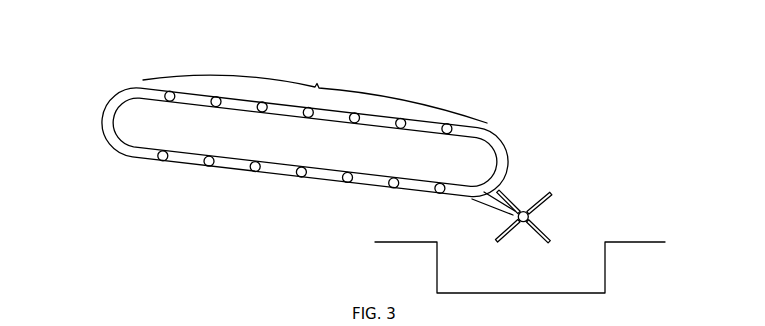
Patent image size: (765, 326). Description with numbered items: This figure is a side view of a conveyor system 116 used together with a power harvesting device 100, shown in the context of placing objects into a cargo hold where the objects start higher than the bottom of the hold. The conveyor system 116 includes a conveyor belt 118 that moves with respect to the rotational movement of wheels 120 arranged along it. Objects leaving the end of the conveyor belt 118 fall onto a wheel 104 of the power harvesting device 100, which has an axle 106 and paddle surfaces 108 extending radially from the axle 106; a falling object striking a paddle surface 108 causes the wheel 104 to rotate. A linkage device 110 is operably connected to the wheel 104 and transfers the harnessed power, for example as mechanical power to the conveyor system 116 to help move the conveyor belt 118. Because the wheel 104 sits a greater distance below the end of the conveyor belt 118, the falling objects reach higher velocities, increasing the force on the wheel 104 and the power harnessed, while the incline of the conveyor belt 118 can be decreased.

The power harvesting device 100 is at (383, 179).
The wheel 104 is at (544, 207).
The axle 106 is at (529, 215).
The paddle surface 108 is at (539, 239).
The linkage device 110 is at (493, 206).
The conveyor system 116 is at (305, 148).
The conveyor belt 118 is at (179, 165).
The wheels 120 is at (210, 167).